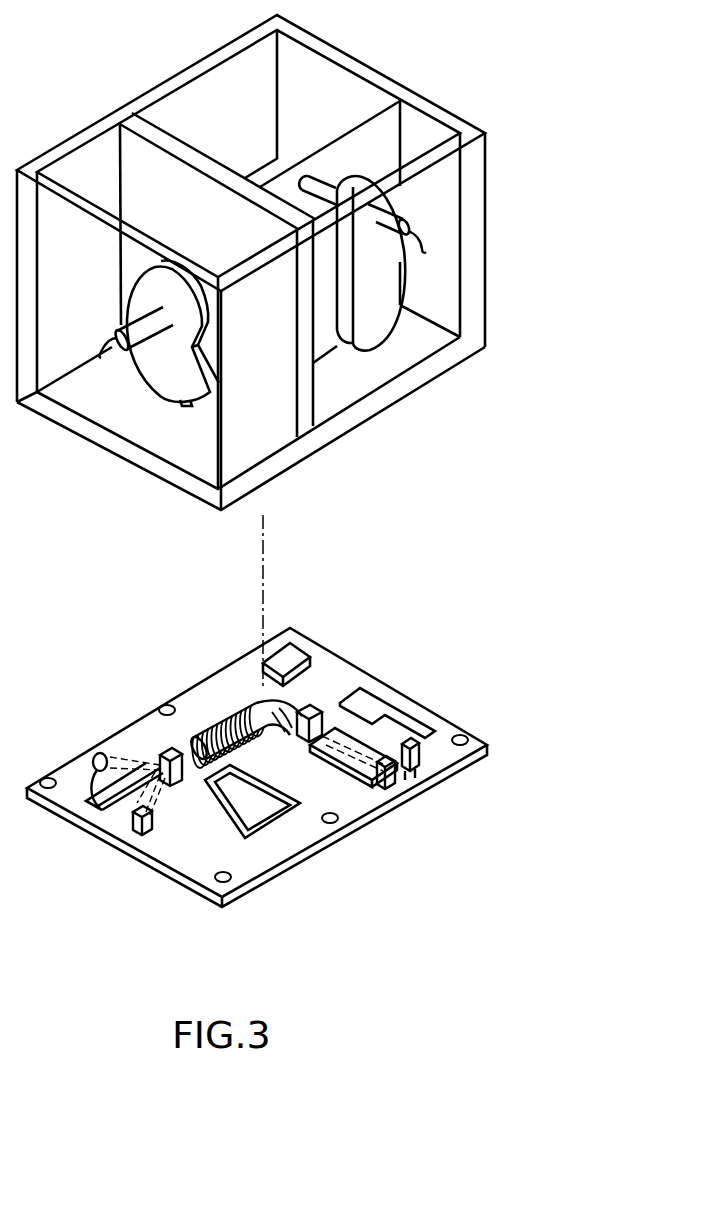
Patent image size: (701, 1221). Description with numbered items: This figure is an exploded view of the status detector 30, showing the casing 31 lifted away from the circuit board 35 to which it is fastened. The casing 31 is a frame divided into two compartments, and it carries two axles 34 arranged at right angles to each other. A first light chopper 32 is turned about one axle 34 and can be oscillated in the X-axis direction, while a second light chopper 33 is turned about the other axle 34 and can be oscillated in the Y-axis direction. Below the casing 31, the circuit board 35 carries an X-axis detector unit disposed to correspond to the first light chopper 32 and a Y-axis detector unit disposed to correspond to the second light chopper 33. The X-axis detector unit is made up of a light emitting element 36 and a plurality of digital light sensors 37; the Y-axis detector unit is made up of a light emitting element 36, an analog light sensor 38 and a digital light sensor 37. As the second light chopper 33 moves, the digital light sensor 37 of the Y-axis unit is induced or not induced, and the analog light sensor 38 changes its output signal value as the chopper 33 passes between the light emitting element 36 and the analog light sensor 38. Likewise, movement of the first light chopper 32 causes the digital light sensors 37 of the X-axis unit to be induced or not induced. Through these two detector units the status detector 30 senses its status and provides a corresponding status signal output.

The status detector 30 is at (125, 97).
The casing 31 is at (480, 282).
The first light chopper 32 is at (382, 337).
The second light chopper 33 is at (170, 392).
The axle 34 is at (107, 357).
The circuit board 35 is at (303, 842).
The light emitting element 36 is at (167, 753).
The digital light sensor 37 is at (137, 822).
The analog light sensor 38 is at (102, 748).